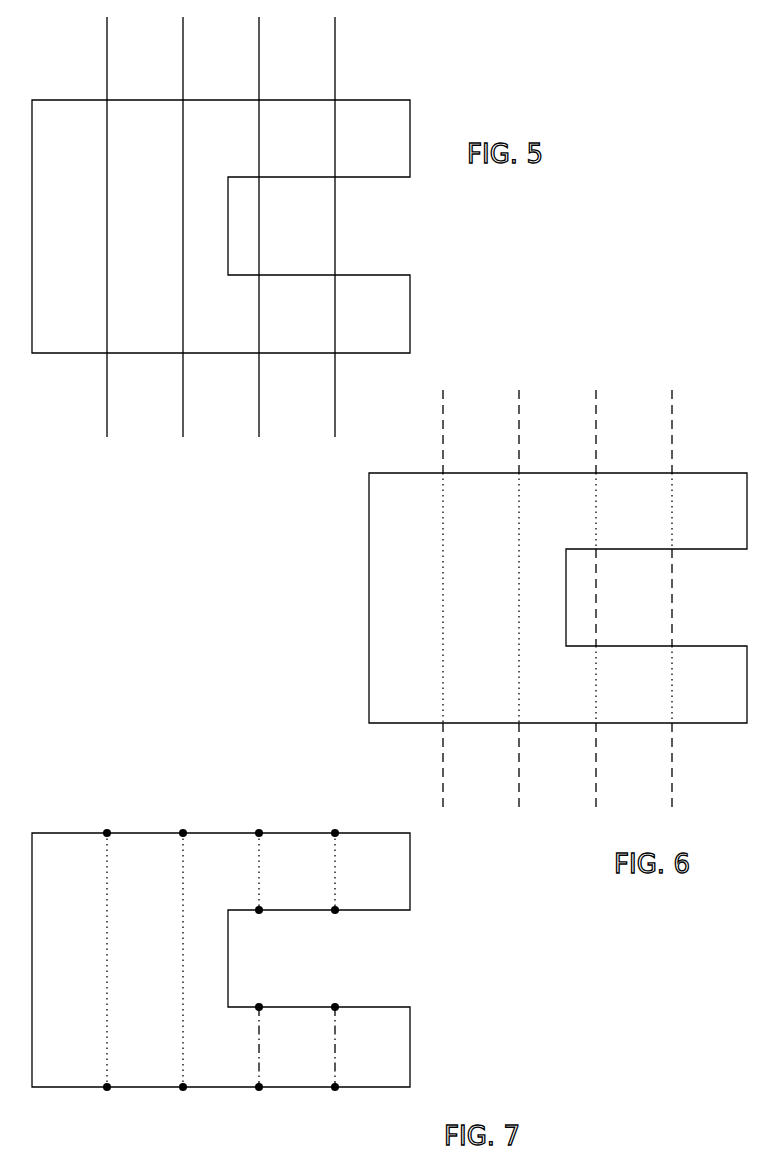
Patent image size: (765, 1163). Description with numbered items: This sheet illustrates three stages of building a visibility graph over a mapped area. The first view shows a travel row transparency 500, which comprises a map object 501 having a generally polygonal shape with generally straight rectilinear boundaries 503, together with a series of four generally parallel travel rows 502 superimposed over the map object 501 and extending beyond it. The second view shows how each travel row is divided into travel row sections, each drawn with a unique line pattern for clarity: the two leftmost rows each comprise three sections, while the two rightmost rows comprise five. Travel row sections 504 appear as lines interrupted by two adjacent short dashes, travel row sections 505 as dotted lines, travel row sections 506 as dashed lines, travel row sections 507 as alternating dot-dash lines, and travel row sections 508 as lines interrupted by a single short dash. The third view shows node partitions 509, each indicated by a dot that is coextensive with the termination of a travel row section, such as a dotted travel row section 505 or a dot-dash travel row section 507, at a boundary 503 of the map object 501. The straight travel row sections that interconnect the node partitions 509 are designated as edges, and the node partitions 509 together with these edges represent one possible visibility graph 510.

In FIG. 5, the travel row transparency 500 is at (276, 274).
In FIG. 5, the map object 501 is at (222, 274).
In FIG. 6, the map object 501 is at (530, 605).
In FIG. 5, the travel rows 502 is at (107, 80).
In FIG. 5, the boundaries 503 is at (62, 100).
In FIG. 6, the boundaries 503 is at (400, 473).
In FIG. 7, the boundaries 503 is at (385, 910).
In FIG. 6, the travel row sections 504 is at (443, 454).
In FIG. 6, the travel row sections 505 is at (443, 523).
In FIG. 7, the travel row sections 505 is at (107, 885).
In FIG. 6, the travel row sections 506 is at (672, 562).
In FIG. 6, the travel row sections 507 is at (596, 697).
In FIG. 7, the travel row sections 507 is at (259, 1048).
In FIG. 6, the travel row sections 508 is at (596, 777).
In FIG. 7, the node partitions 509 is at (107, 833).
In FIG. 7, the visibility graph 510 is at (280, 991).